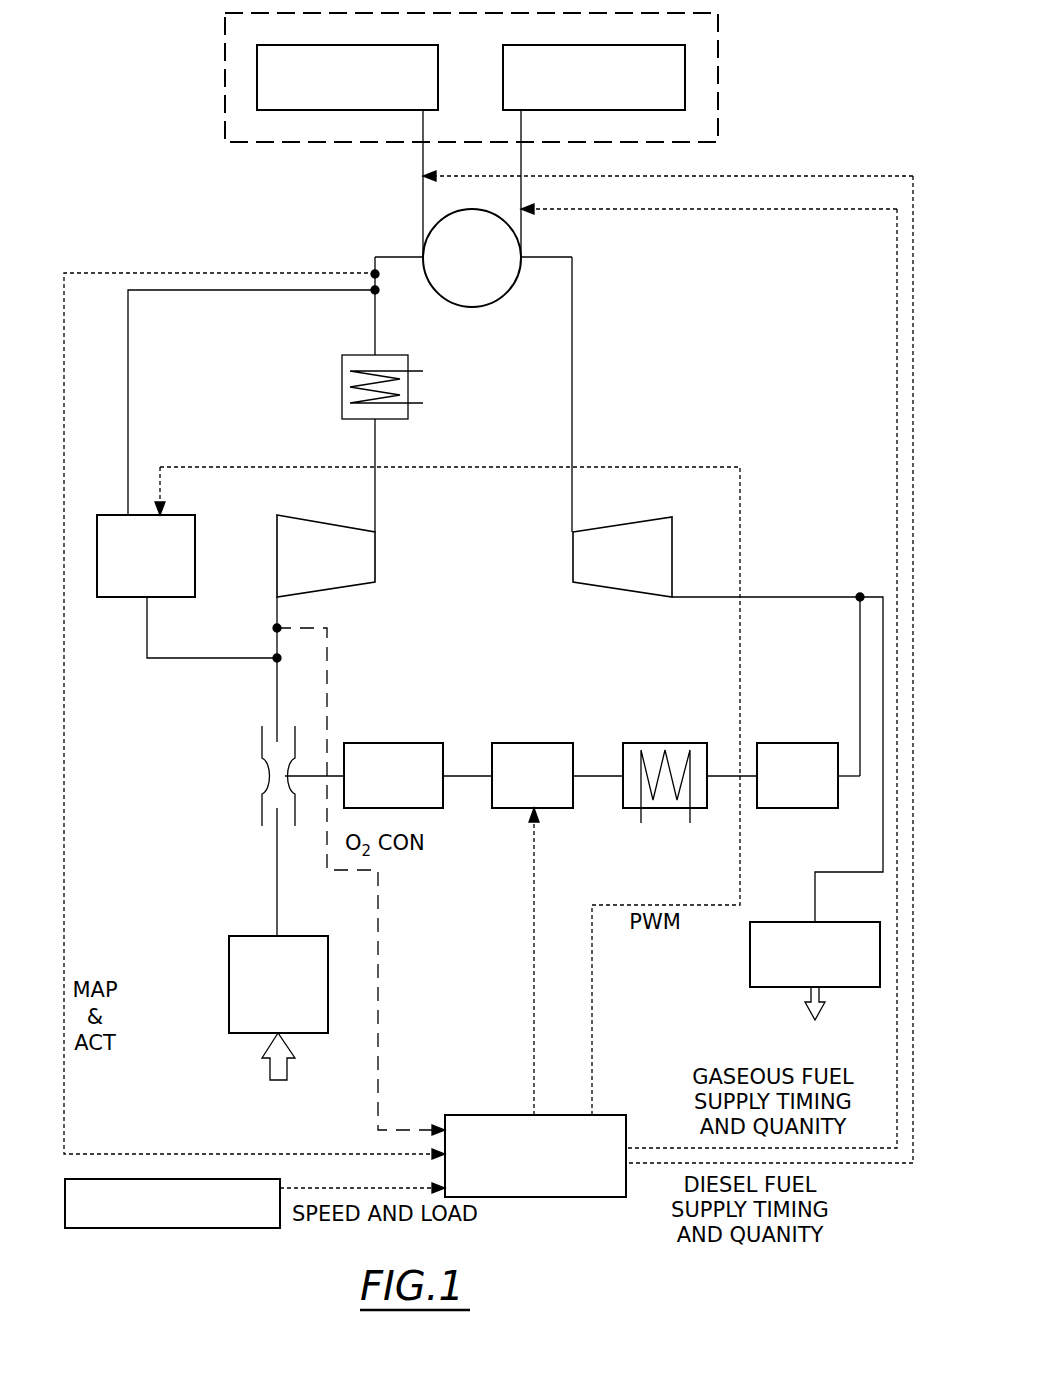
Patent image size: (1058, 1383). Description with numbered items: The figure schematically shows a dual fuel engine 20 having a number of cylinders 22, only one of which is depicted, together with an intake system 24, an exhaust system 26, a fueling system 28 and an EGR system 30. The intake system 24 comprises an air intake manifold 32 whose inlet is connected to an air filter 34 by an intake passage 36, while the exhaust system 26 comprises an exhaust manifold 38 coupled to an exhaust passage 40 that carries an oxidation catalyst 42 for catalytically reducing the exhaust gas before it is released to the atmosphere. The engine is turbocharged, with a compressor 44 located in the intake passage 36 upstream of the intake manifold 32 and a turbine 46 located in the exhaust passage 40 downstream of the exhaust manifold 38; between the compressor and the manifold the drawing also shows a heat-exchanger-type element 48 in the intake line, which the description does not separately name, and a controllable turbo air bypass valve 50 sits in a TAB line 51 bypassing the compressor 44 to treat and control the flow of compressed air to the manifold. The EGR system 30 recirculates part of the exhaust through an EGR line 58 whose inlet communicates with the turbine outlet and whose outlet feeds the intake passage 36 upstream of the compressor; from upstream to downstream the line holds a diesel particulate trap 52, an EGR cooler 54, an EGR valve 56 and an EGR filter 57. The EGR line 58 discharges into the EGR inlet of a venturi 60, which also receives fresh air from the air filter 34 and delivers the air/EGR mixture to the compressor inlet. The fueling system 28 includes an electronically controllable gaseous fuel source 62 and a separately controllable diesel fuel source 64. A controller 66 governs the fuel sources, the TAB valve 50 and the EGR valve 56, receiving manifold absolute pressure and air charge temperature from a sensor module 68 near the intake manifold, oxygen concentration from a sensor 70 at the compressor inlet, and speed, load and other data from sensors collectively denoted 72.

The dual fuel engine 20 is at (748, 110).
The cylinder 22 is at (485, 307).
The intake system 24 is at (290, 360).
The exhaust system 26 is at (596, 440).
The fueling system 28 is at (728, 20).
The EGR system 30 is at (758, 646).
The air intake manifold 32 is at (420, 252).
The air filter 34 is at (229, 958).
The intake passage 36 is at (277, 873).
The exhaust manifold 38 is at (527, 258).
The exhaust passage 40 is at (575, 328).
The oxidation catalyst 42 is at (797, 887).
The compressor 44 is at (306, 521).
The turbine 46 is at (621, 524).
The intercooler 48 is at (410, 388).
The turbo air bypass (TAB) valve 50 is at (180, 515).
The TAB line 51 is at (128, 407).
The diesel particulate trap 52 is at (790, 742).
The EGR cooler 54 is at (658, 742).
The EGR valve 56 is at (522, 742).
The EGR filter 57 is at (380, 742).
The EGR line 58 is at (591, 773).
The venturi 60 is at (262, 733).
The gaseous fuel source 62 is at (685, 62).
The diesel fuel source 64 is at (257, 52).
The controller 66 is at (478, 1115).
The MAP/ACT sensor module 68 is at (372, 272).
The O2 concentration sensor 70 is at (274, 627).
The sensors 72 is at (168, 1228).